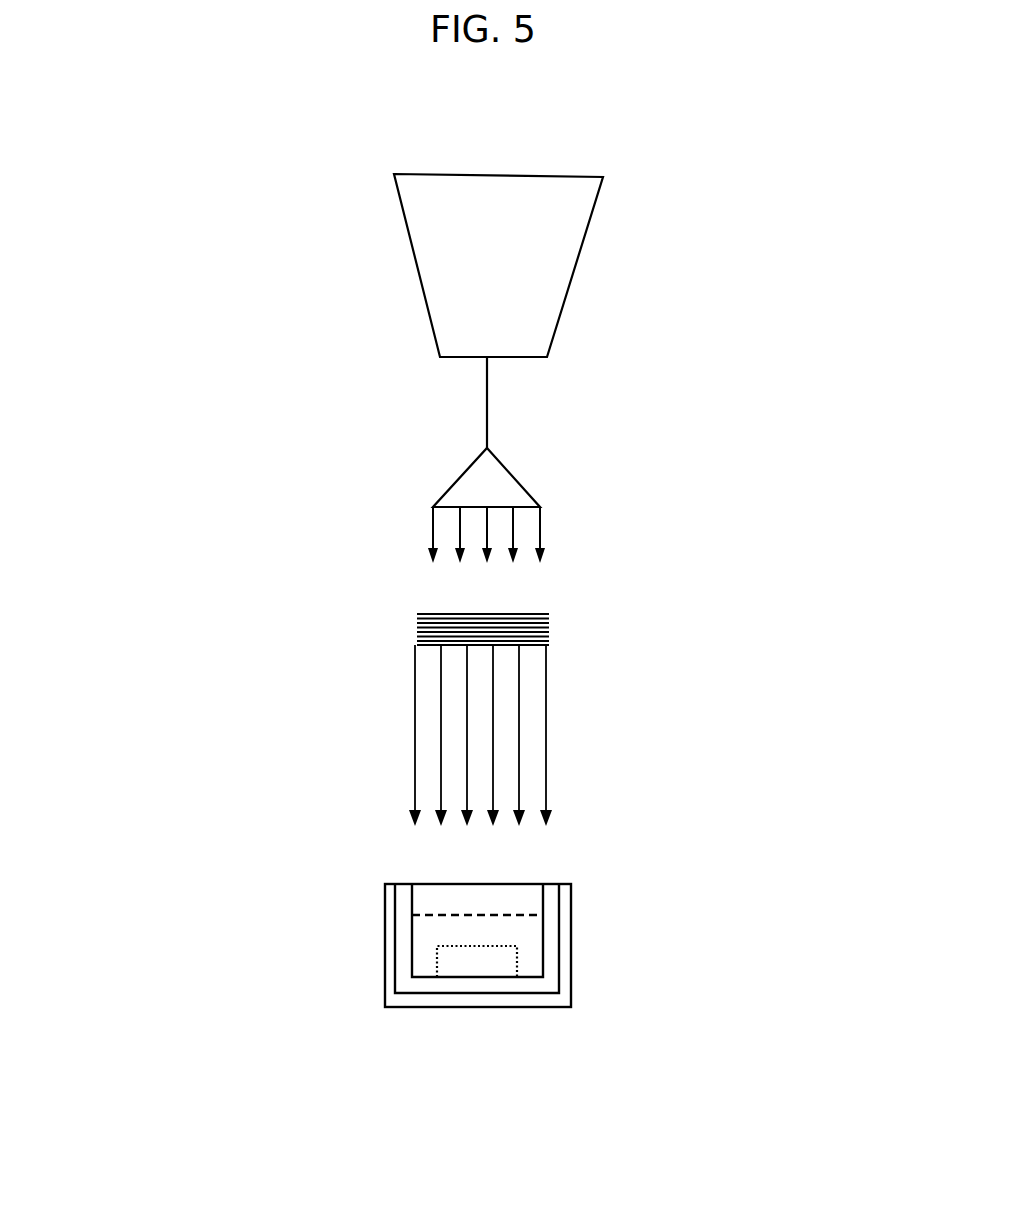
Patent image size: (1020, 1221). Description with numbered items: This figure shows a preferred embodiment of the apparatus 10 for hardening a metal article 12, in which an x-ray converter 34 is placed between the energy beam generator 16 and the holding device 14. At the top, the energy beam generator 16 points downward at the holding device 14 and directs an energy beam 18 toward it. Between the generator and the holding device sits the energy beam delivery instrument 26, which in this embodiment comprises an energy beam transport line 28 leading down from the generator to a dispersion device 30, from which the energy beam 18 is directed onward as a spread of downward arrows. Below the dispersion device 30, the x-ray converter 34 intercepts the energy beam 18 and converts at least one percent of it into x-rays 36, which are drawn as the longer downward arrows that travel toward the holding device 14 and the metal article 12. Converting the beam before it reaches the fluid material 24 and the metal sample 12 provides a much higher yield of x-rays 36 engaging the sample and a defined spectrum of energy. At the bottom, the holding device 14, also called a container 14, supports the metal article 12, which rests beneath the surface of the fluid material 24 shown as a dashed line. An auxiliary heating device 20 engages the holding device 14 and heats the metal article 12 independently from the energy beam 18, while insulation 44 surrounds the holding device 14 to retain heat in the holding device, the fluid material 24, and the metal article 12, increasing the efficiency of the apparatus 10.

The apparatus 10 is at (752, 197).
The metal article 12 is at (438, 955).
The holding device 14 is at (305, 891).
The energy beam generator 16 is at (392, 179).
The energy beam 18 is at (542, 530).
The auxiliary heating device 20 is at (394, 928).
The fluid material 24 is at (533, 917).
The energy beam delivery instrument 26 is at (570, 431).
The energy beam transport line 28 is at (258, 402).
The dispersion device 30 is at (452, 485).
The x-ray converter 34 is at (417, 628).
The x-rays 36 is at (548, 692).
The insulation 44 is at (572, 997).